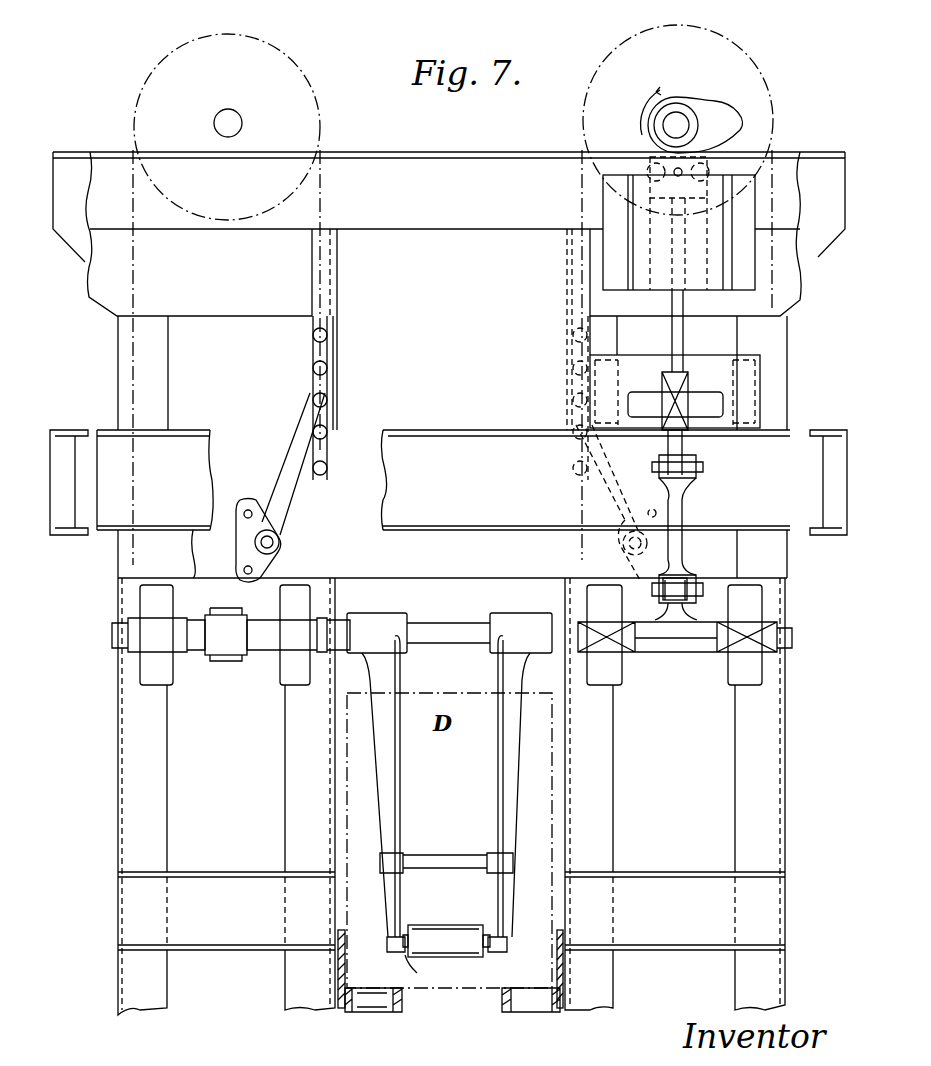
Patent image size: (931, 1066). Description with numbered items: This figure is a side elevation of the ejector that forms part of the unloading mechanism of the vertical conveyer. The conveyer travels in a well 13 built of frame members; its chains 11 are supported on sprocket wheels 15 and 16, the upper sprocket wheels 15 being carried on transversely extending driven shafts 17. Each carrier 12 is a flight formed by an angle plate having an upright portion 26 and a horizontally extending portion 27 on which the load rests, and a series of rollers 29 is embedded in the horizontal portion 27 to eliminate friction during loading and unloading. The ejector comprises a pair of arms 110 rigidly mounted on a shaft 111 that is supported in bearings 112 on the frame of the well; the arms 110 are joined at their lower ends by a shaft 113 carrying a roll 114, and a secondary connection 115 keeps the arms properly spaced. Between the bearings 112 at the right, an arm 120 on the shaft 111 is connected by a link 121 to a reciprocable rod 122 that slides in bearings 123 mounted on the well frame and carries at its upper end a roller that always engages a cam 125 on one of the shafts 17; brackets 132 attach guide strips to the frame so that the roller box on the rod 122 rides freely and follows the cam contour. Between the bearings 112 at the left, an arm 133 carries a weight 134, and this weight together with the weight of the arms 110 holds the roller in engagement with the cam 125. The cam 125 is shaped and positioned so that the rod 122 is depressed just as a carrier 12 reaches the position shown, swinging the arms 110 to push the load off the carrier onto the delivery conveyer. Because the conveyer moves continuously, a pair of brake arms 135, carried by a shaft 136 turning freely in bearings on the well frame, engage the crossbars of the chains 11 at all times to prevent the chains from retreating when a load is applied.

The chains 11 is at (330, 355).
The carrier 12 is at (345, 1012).
The well 13 is at (448, 365).
The sprocket wheel 15 is at (226, 299).
The sprocket wheel 16 is at (677, 292).
The shaft 17 is at (236, 114).
The upright portion 26 is at (343, 972).
The horizontally extending portion 27 is at (403, 1003).
The rollers 29 is at (373, 995).
The arms 110 is at (470, 777).
The shaft 111 is at (440, 638).
The bearings 112 is at (140, 662).
The shaft 113 is at (426, 969).
The roll 114 is at (438, 942).
The secondary connection 115 is at (445, 865).
The arm 120 is at (680, 612).
The link 121 is at (682, 507).
The reciprocable rod 122 is at (683, 338).
The bearings 123 is at (682, 400).
The cam 125 is at (735, 117).
The brackets 132 is at (612, 250).
The arm 133 is at (210, 640).
The weight 134 is at (230, 660).
The brake arms 135 is at (288, 485).
The shaft 136 is at (272, 548).